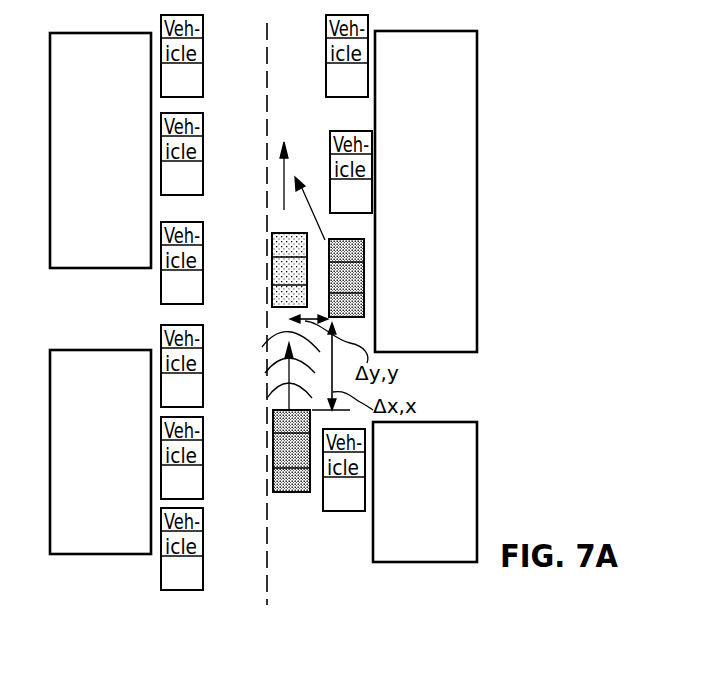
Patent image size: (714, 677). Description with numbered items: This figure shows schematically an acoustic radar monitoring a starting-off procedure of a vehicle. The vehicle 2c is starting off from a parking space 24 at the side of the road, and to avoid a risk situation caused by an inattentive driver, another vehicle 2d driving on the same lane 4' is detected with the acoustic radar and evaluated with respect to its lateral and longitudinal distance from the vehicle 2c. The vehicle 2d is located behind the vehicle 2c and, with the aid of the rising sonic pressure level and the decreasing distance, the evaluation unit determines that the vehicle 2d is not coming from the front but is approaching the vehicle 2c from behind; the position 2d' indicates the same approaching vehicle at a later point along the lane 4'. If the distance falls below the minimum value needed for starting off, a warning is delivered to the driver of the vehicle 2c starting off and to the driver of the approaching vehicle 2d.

The preceding vehicle (earlier position) 2d' is at (260, 257).
The parking space 24 is at (357, 236).
The vehicle 2c is at (355, 300).
The vehicle 2d is at (262, 451).
The lane 4' is at (286, 161).